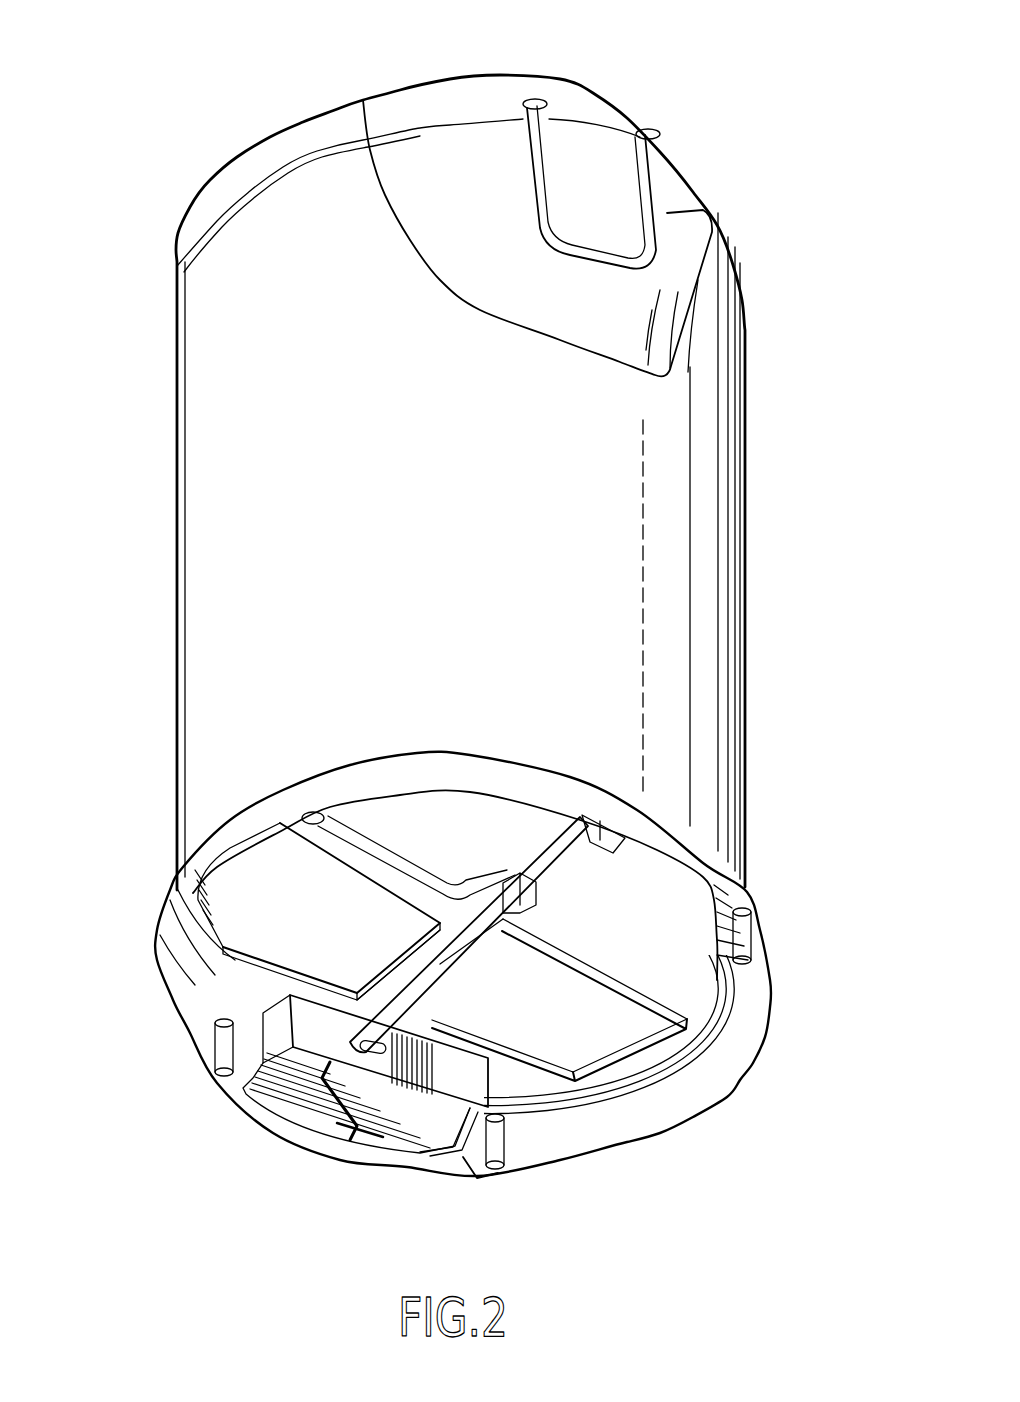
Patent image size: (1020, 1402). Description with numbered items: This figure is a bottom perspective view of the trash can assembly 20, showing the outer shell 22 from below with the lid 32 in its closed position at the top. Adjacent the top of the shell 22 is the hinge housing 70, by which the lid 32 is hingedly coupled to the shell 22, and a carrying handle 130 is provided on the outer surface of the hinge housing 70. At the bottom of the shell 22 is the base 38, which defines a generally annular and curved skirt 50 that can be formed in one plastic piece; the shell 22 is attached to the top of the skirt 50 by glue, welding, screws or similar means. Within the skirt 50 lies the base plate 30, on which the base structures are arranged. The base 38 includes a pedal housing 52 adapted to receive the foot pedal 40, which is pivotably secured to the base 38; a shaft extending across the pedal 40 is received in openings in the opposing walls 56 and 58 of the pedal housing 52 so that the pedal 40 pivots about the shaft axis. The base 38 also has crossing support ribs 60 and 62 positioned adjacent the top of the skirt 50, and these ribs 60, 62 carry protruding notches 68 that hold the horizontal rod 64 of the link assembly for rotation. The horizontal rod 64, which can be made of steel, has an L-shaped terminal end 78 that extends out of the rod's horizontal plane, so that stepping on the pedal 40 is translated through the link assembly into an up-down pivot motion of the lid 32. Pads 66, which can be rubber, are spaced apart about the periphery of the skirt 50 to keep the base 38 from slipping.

The trash can assembly 20 is at (158, 552).
The outer shell 22 is at (768, 473).
The base plate 30 is at (645, 953).
The lid 32 is at (297, 128).
The base 38 is at (173, 889).
The foot pedal 40 is at (310, 1118).
The skirt 50 is at (487, 770).
The pedal housing 52 is at (478, 1063).
The wall of pedal housing 56 is at (272, 1028).
The wall of pedal housing 58 is at (464, 1160).
The support rib 60 is at (365, 870).
The support rib 62 is at (393, 960).
The horizontal rod 64 is at (440, 997).
The pad 66 is at (762, 950).
The protruding notch 68 is at (512, 872).
The hinge housing 70 is at (470, 130).
The L-shaped terminal end 78 is at (358, 1147).
The carrying handle 130 is at (707, 210).